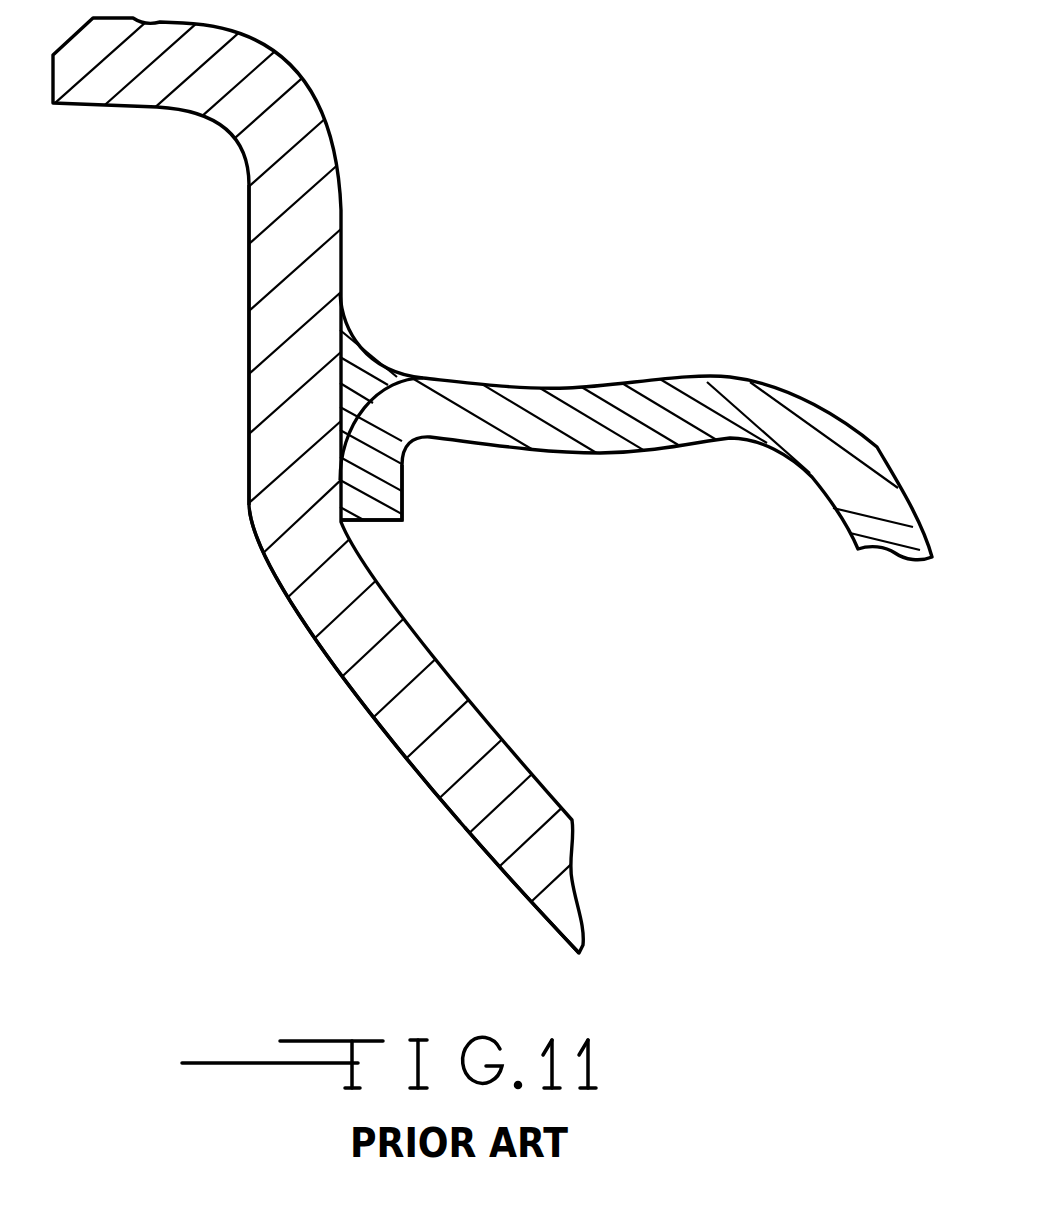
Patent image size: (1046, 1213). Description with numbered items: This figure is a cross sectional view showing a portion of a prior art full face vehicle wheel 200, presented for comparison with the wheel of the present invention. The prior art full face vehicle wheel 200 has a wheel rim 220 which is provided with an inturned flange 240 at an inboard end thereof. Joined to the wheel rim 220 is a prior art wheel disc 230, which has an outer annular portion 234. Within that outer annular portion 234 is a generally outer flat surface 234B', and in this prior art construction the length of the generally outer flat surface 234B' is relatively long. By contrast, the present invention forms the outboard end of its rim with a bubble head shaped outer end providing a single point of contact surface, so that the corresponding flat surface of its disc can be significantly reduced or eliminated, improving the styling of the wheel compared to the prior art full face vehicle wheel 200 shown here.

The prior art full face vehicle wheel 200 is at (301, 671).
The wheel rim 220 is at (702, 377).
The prior art wheel disc 230 is at (486, 858).
The outer annular portion 234 is at (366, 716).
The generally outer flat surface 234B' is at (169, 345).
The inturned flange 240 is at (423, 513).